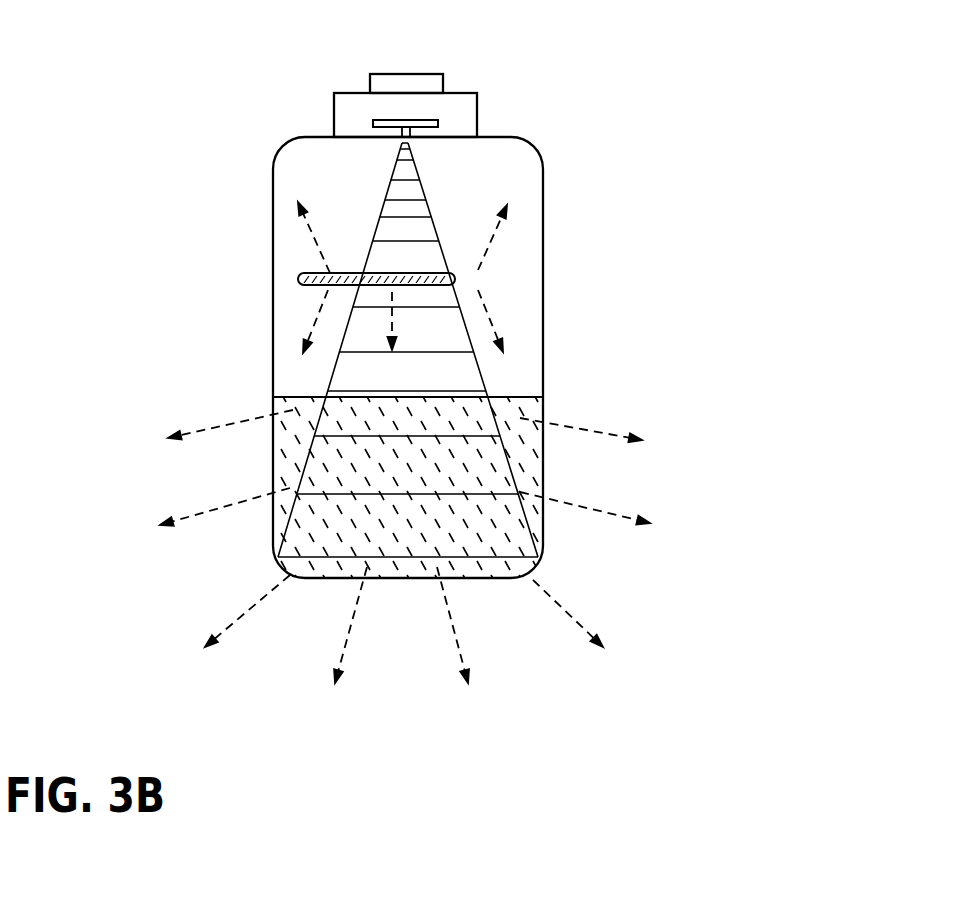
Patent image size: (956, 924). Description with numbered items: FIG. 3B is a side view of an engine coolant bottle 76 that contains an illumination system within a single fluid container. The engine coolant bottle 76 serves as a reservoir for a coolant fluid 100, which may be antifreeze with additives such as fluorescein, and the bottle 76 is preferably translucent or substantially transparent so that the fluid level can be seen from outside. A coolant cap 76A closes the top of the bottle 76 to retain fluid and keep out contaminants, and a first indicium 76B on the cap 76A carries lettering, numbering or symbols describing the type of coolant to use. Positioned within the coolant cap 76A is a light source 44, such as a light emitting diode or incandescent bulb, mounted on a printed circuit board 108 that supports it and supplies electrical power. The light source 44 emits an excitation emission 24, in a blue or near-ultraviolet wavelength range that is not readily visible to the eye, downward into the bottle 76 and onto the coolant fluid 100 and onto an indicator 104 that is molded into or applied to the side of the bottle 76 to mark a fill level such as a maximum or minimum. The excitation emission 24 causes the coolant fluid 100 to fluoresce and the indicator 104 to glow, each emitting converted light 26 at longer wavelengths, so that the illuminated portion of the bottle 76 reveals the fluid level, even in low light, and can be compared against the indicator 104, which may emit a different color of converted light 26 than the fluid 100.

The engine coolant bottle 76 is at (563, 140).
The coolant cap 76A is at (465, 108).
The first indicium 76B is at (443, 80).
The printed circuit board 108 is at (380, 120).
The light source 44 is at (402, 133).
The excitation emission 24 is at (383, 202).
The indicator 104 is at (292, 280).
The coolant fluid 100 is at (522, 446).
The converted light 26 is at (500, 323).